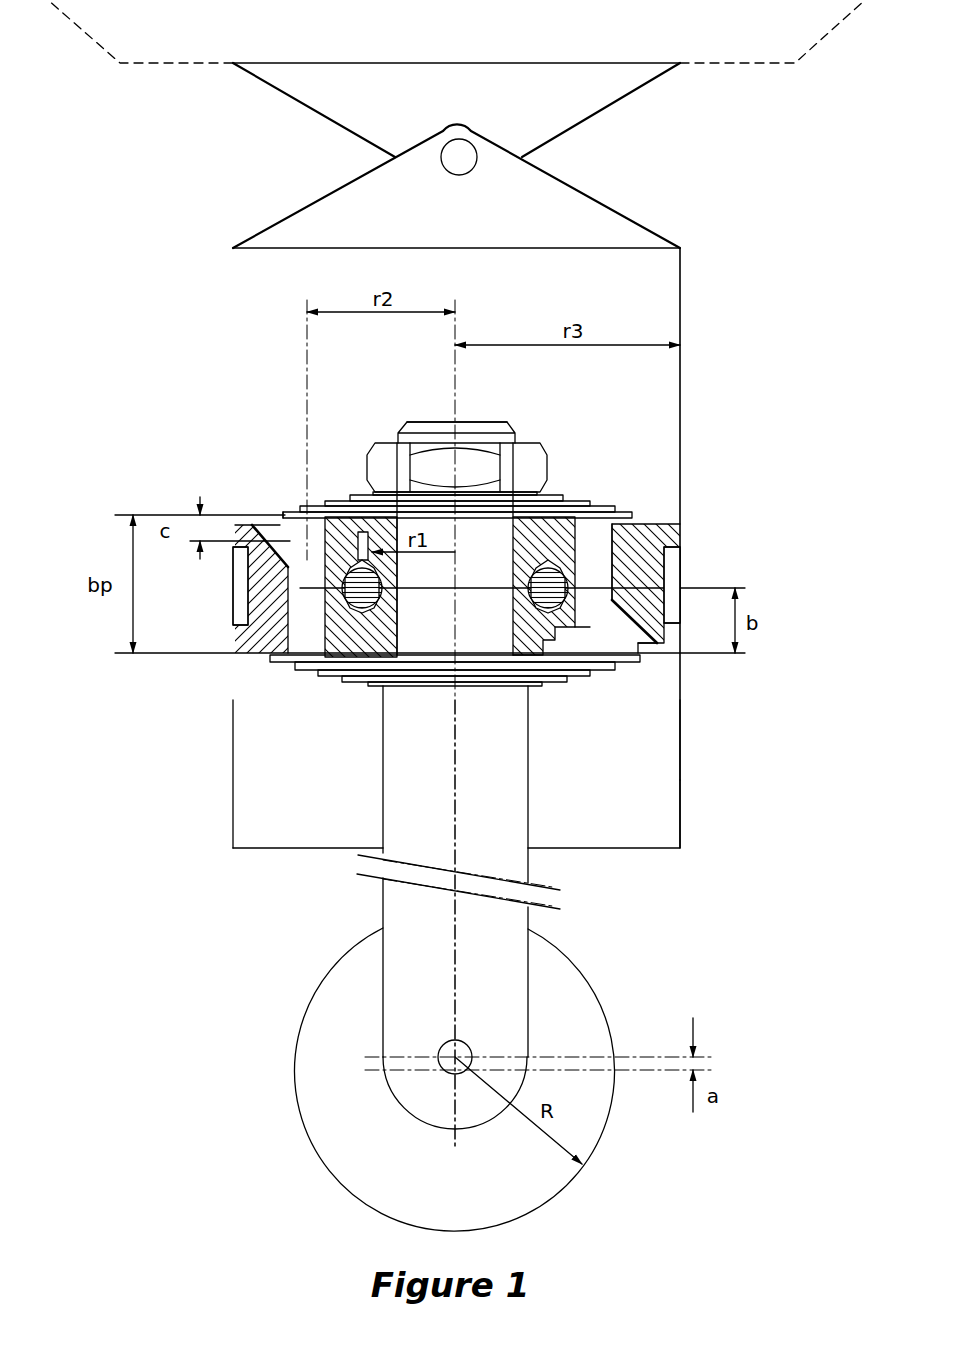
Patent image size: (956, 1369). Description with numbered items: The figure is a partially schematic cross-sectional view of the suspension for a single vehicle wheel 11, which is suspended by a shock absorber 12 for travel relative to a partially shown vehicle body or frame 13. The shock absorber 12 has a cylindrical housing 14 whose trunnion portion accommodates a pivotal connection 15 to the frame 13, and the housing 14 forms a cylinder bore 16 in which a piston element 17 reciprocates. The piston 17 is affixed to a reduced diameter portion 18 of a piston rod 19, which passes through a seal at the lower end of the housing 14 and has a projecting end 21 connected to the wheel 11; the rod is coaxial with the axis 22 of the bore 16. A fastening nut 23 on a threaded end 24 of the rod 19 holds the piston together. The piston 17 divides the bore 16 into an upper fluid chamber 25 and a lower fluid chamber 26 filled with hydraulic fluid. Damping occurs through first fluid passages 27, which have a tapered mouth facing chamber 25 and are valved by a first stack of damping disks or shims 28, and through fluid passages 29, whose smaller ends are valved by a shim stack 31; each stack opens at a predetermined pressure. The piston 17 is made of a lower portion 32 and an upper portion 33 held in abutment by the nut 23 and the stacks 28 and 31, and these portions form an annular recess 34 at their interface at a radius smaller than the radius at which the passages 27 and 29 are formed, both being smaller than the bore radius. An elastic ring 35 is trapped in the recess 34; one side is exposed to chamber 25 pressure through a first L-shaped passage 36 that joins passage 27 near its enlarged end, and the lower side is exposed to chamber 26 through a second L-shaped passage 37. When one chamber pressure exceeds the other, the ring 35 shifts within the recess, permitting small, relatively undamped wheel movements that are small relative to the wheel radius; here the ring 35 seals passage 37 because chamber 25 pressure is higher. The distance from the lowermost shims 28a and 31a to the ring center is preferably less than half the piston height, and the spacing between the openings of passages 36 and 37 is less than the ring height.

The suspended wheel 11 is at (596, 1007).
The shock absorber 12 is at (708, 365).
The vehicle body or frame 13 is at (640, 52).
The shock absorber cylindrical housing 14 is at (682, 752).
The pivotal connection 15 is at (476, 166).
The cylinder bore 16 is at (678, 772).
The piston element 17 is at (676, 522).
The reduced diameter portion 18 is at (471, 636).
The piston rod 19 is at (515, 800).
The projecting end 21 is at (430, 1090).
The axis 22 is at (451, 764).
The fastening nut 23 is at (383, 448).
The threaded end 24 is at (489, 421).
The upper fluid chamber 25 is at (662, 432).
The lower fluid chamber 26 is at (255, 764).
The first fluid passages 27 is at (281, 519).
The first stack of damping disks or shims 28 is at (384, 686).
The lowermost shim 28a is at (620, 672).
The fluid passages 29 is at (630, 636).
The disk or shim stack 31 is at (561, 492).
The lowermost shim 31a is at (617, 508).
The lower portion 32 is at (341, 651).
The upper portion 33 is at (683, 532).
The annular recess 34 is at (346, 577).
The elastic ring 35 is at (346, 600).
The first L-shaped passage 36 is at (338, 538).
The second L-shaped passage 37 is at (578, 630).